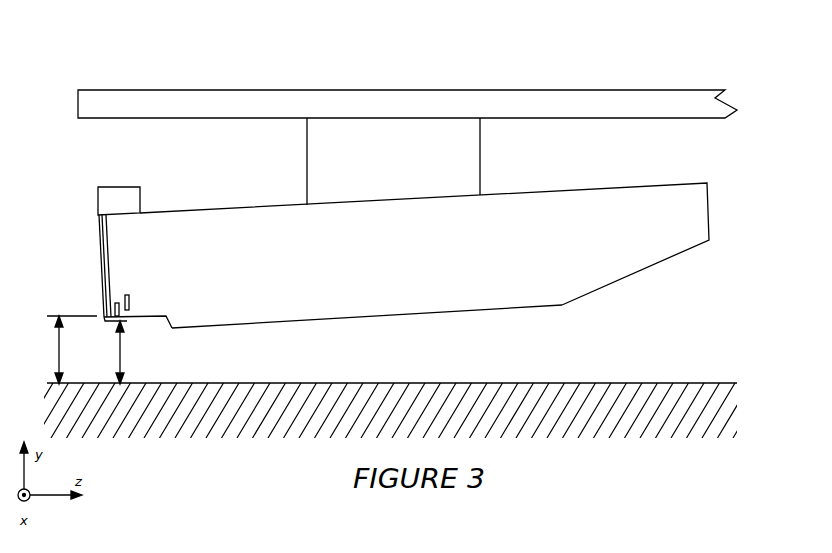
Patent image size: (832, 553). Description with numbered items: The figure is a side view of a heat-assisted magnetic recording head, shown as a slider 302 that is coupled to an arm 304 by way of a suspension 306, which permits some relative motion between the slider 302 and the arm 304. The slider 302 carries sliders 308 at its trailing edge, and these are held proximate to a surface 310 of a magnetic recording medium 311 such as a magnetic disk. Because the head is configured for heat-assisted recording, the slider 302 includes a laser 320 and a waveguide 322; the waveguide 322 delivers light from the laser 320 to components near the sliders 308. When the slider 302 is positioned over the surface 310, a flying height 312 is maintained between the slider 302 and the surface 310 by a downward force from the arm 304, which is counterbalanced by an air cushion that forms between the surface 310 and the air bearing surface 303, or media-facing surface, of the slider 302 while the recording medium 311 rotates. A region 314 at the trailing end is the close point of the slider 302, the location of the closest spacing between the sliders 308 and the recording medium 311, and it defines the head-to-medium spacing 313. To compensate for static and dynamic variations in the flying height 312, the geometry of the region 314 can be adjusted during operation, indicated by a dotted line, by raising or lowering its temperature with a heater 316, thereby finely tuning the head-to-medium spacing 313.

The slider 302 is at (606, 196).
The air bearing surface 303 is at (265, 326).
The arm 304 is at (657, 93).
The suspension 306 is at (482, 153).
The sliders 308 is at (108, 300).
The surface 310 is at (608, 383).
The magnetic recording medium 311 is at (620, 423).
The flying height 312 is at (57, 350).
The head-to-medium spacing 313 is at (101, 352).
The region 314 is at (126, 321).
The heater 316 is at (125, 296).
The laser 320 is at (118, 195).
The waveguide 322 is at (102, 240).